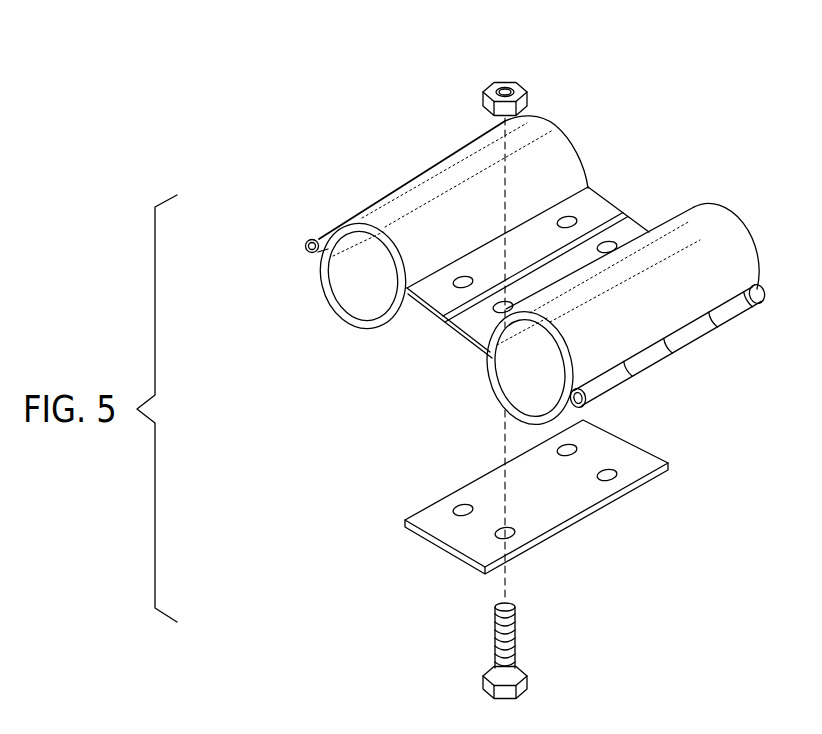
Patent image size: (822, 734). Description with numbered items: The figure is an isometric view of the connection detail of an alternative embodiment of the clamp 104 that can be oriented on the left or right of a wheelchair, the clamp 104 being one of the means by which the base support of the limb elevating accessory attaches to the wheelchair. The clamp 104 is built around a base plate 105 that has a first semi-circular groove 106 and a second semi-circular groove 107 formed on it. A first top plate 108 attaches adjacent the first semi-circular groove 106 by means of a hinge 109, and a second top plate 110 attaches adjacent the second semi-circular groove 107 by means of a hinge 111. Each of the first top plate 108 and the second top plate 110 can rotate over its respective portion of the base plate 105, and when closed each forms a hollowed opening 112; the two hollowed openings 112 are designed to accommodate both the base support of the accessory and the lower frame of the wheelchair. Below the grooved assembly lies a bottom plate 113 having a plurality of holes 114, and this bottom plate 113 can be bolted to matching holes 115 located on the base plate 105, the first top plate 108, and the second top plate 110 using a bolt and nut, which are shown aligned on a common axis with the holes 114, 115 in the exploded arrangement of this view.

The clamp 104 is at (590, 102).
The base plate 105 is at (457, 334).
The first semi-circular groove 106 is at (352, 329).
The second semi-circular groove 107 is at (517, 421).
The first top plate 108 is at (435, 208).
The hinge 109 is at (308, 238).
The second top plate 110 is at (706, 212).
The hinge 111 is at (762, 289).
The hollowed opening 112 is at (358, 283).
The bottom plate 113 is at (570, 508).
The holes 114 is at (512, 535).
The holes 115 is at (510, 303).